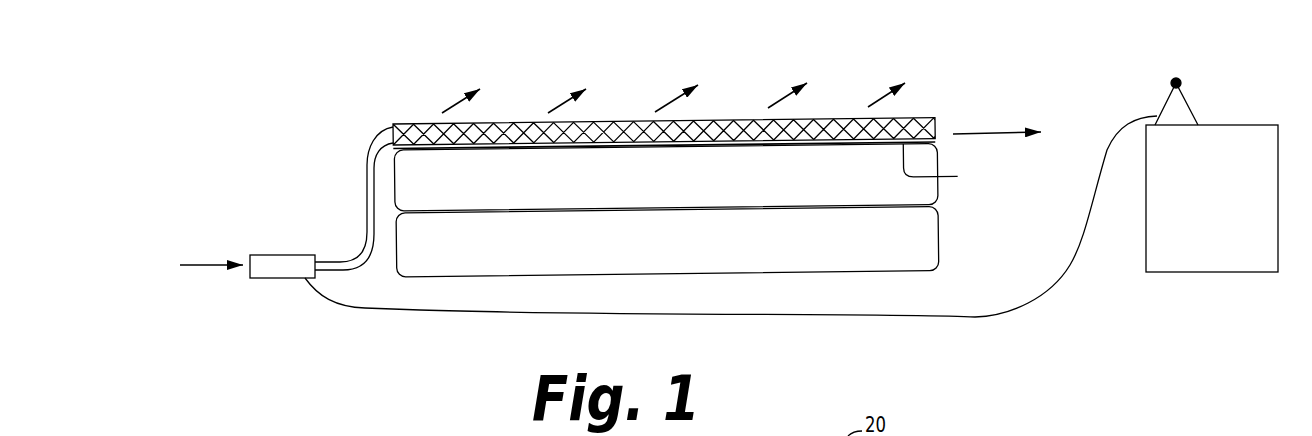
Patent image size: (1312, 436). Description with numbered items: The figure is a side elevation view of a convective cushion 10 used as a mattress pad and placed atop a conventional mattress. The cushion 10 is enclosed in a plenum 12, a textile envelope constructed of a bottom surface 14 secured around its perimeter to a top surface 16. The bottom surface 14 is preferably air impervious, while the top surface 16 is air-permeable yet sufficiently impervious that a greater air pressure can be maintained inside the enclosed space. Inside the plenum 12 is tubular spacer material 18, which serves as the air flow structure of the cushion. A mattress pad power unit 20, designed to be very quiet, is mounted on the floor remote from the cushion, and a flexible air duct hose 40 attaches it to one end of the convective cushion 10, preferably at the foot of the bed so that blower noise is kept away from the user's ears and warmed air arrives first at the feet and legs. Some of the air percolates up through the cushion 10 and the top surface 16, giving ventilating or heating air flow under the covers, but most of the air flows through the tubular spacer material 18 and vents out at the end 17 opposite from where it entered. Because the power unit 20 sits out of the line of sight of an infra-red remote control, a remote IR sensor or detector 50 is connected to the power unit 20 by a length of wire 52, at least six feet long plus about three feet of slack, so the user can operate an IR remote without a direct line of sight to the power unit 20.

The convective cushion 10 is at (401, 106).
The plenum 12 is at (730, 124).
The bottom surface 14 is at (689, 210).
The top surface 16 is at (916, 118).
The end 17 is at (938, 128).
The tubular spacer material 18 is at (503, 125).
The mattress pad power unit 20 is at (276, 252).
The flexible air duct hose 40 is at (365, 188).
The remote IR sensor or detector 50 is at (1190, 103).
The wire 52 is at (1022, 307).